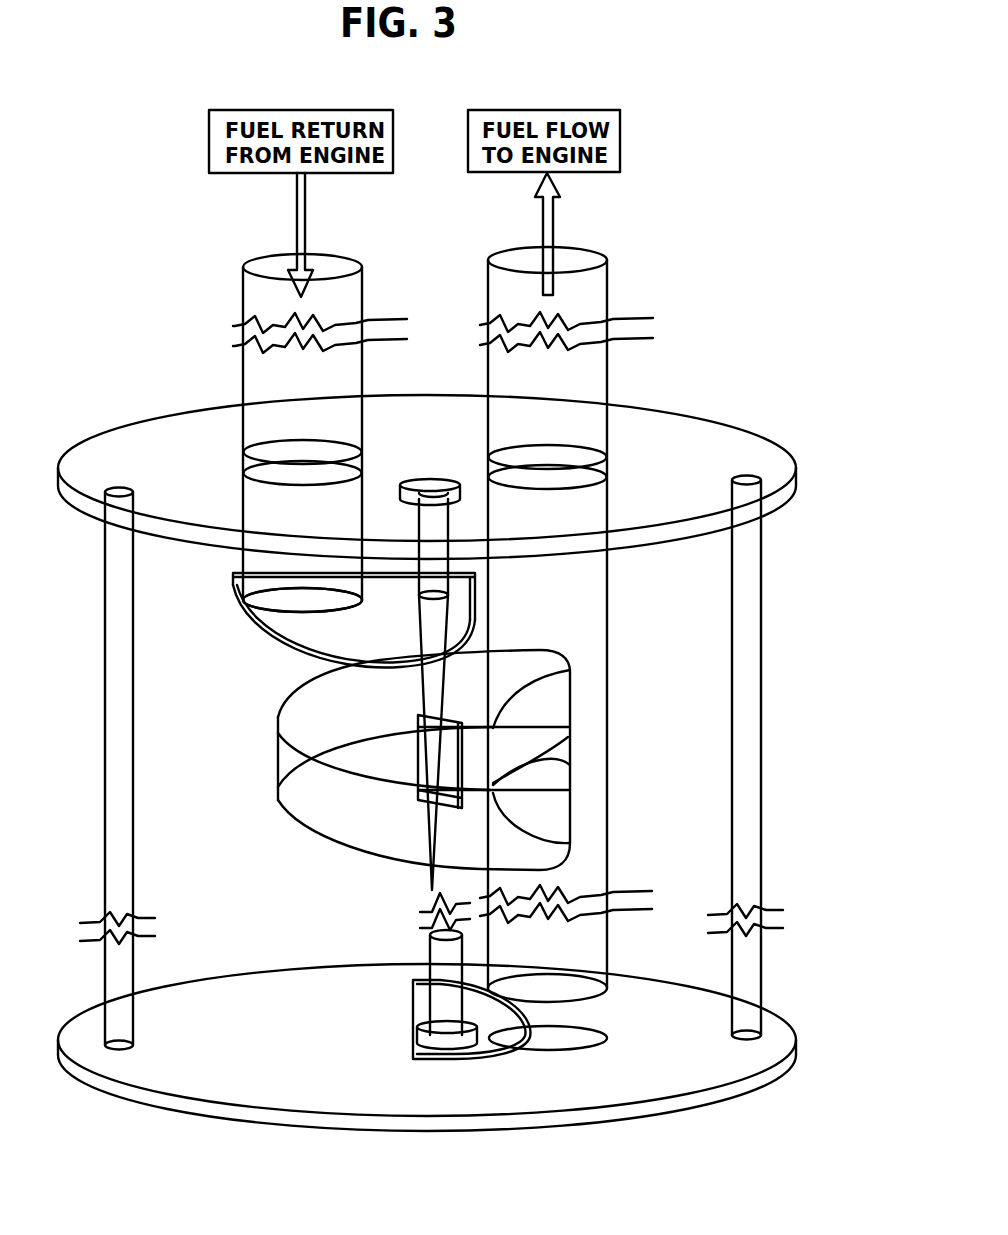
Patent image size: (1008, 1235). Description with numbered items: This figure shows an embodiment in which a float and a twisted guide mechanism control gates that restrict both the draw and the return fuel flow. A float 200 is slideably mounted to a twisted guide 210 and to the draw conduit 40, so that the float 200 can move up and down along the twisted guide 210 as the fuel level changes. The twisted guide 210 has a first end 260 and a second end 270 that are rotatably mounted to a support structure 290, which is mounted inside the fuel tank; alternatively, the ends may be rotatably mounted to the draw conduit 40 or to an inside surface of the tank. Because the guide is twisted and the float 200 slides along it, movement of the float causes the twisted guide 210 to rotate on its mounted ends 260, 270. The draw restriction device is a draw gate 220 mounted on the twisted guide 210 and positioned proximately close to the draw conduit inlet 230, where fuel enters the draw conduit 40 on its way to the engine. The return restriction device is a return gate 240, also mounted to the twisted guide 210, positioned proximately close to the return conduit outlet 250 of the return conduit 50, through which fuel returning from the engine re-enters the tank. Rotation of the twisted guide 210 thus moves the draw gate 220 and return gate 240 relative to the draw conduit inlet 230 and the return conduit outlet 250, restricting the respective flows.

The draw conduit 40 is at (607, 296).
The fuel return tube from engine 50 is at (243, 302).
The float 200 is at (470, 767).
The twisted guide 210 is at (432, 527).
The draw gate 220 is at (483, 1013).
The draw conduit inlet 230 is at (603, 992).
The return gate 240 is at (373, 628).
The return conduit outlet 250 is at (318, 598).
The first end 260 is at (445, 480).
The second end 270 is at (413, 1027).
The support structure 290 is at (93, 687).